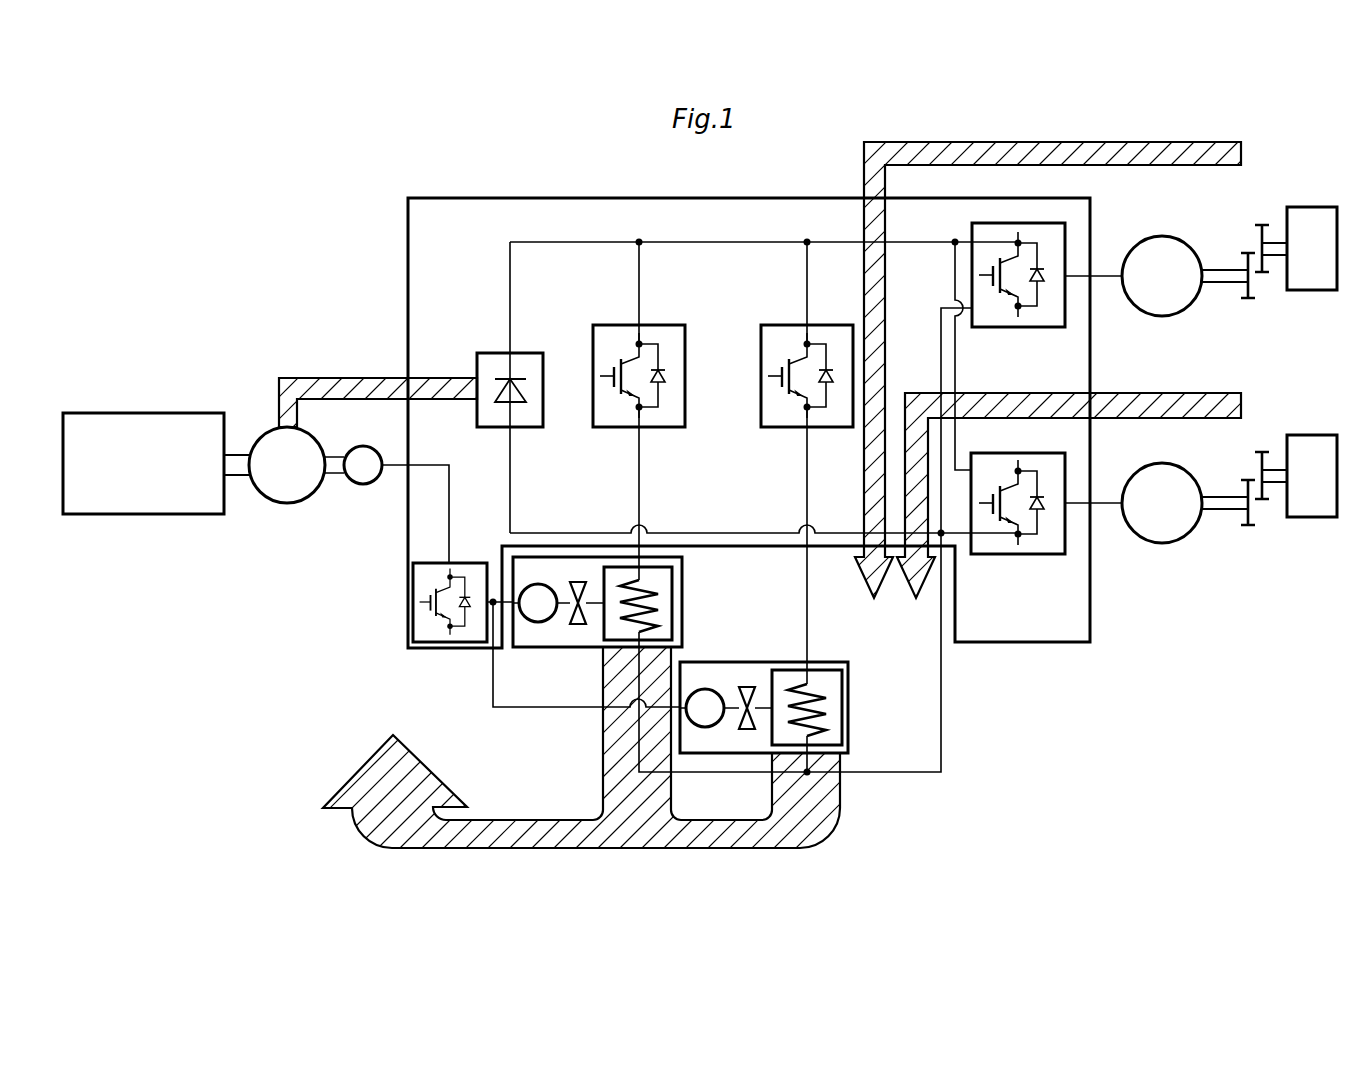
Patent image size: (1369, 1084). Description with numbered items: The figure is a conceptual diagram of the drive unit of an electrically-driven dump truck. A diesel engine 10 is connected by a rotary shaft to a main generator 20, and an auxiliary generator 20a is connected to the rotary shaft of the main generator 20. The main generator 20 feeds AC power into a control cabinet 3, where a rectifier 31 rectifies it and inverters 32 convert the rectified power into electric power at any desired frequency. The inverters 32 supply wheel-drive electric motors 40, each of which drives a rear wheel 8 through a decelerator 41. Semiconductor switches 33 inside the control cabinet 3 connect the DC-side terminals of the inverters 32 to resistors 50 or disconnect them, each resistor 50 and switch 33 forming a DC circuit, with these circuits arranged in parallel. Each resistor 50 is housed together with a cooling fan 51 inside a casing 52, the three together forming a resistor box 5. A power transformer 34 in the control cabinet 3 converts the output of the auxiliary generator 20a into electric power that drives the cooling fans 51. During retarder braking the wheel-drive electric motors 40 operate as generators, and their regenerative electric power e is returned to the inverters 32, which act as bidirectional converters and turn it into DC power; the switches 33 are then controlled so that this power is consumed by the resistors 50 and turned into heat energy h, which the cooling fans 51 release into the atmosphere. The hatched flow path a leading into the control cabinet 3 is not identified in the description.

The diesel engine 10 is at (164, 410).
The main generator 20 is at (287, 503).
The auxiliary generator 20a is at (362, 485).
The control cabinet 3 is at (531, 197).
The rectifier 31 is at (528, 352).
The semiconductor switch 33 is at (663, 323).
The power transformer 34 is at (411, 622).
The inverter 32 is at (1027, 330).
The wheel-drive electric motor 40 is at (1178, 312).
The decelerator 41 is at (1263, 284).
The rear wheel 8 is at (1313, 207).
The resistor box 5 is at (682, 603).
The resistor 50 is at (648, 586).
The cooling fan 51 is at (576, 580).
The casing 52 is at (546, 650).
The intake air flow a is at (1063, 142).
The regenerative electric power e is at (1128, 393).
The heat energy h is at (440, 848).